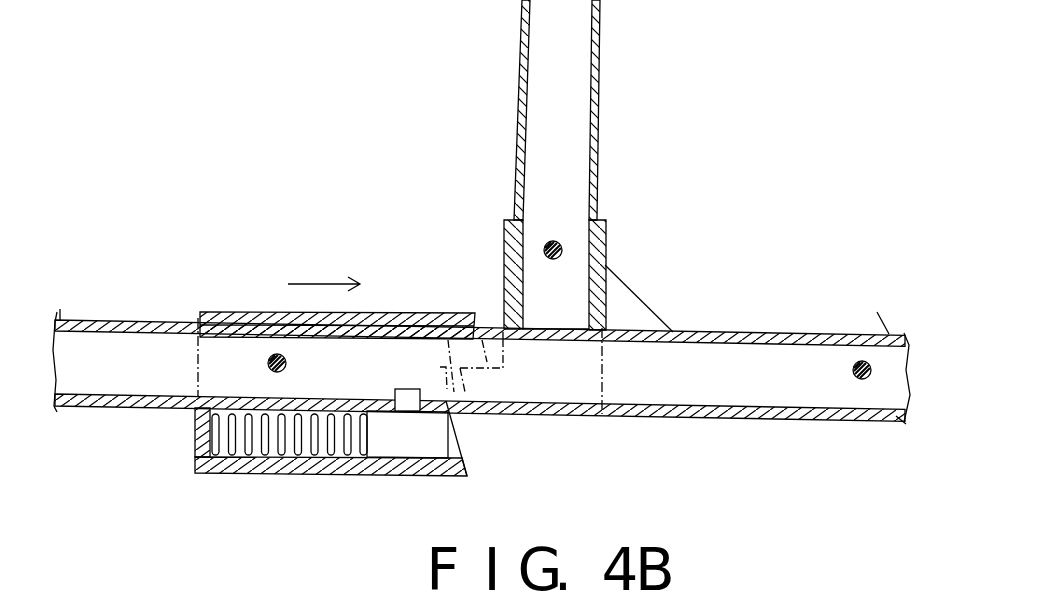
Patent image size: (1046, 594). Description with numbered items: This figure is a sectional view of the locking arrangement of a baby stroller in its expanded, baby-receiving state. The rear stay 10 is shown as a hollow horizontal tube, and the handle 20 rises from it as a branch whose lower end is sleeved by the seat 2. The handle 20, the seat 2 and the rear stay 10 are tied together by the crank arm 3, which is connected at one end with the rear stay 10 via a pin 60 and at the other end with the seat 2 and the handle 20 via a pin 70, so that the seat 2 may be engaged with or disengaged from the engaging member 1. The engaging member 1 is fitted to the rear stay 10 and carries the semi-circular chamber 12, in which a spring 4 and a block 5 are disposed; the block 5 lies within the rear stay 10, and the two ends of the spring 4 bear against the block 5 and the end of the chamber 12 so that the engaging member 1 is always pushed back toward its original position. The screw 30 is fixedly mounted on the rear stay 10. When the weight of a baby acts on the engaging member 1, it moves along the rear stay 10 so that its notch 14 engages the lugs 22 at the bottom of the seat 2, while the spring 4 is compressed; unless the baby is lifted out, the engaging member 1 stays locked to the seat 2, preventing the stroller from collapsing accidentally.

The engaging member 1 is at (357, 478).
The seat 2 is at (504, 285).
The crank arm 3 is at (660, 324).
The spring 4 is at (283, 462).
The block 5 is at (417, 440).
The rear stay 10 is at (661, 410).
The semi-circular chamber 12 is at (197, 447).
The notch 14 is at (447, 314).
The handle 20 is at (598, 129).
The lugs 22 is at (482, 387).
The screw 30 is at (275, 354).
The pin 60 is at (858, 361).
The pin 70 is at (562, 249).